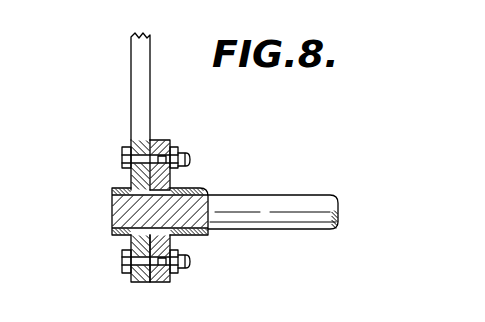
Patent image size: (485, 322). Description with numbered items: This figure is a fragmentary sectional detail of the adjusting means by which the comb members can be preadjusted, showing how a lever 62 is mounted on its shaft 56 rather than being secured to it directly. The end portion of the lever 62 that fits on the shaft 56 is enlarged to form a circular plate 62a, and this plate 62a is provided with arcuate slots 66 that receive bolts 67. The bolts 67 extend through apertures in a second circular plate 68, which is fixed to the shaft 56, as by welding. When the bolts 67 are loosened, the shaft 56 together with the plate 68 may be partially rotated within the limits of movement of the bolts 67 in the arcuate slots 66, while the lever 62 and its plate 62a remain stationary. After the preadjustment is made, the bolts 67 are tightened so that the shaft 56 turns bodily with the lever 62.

The shaft 56 is at (242, 203).
The lever 62 is at (138, 81).
The circular plate 62a is at (137, 283).
The arcuate slots 66 is at (148, 283).
The bolts 67 is at (121, 160).
The second circular plate 68 is at (157, 131).